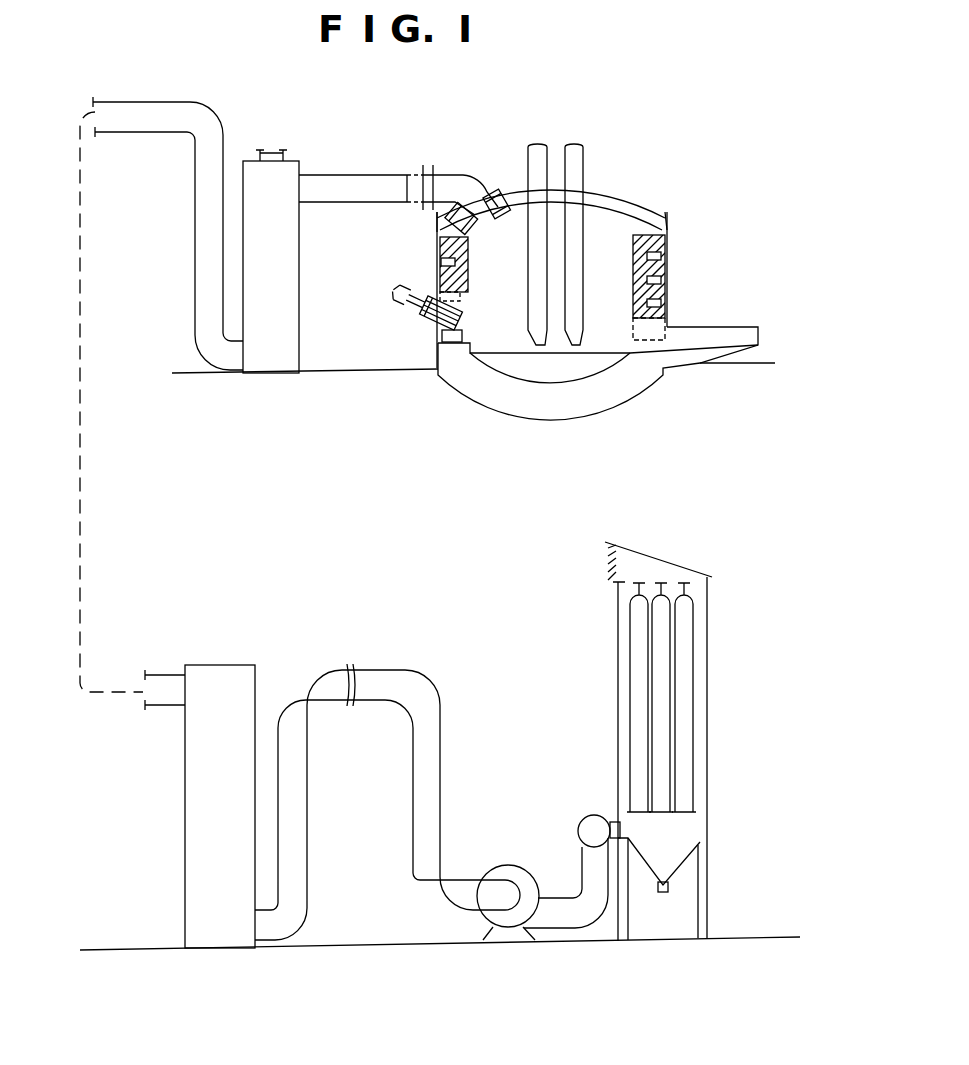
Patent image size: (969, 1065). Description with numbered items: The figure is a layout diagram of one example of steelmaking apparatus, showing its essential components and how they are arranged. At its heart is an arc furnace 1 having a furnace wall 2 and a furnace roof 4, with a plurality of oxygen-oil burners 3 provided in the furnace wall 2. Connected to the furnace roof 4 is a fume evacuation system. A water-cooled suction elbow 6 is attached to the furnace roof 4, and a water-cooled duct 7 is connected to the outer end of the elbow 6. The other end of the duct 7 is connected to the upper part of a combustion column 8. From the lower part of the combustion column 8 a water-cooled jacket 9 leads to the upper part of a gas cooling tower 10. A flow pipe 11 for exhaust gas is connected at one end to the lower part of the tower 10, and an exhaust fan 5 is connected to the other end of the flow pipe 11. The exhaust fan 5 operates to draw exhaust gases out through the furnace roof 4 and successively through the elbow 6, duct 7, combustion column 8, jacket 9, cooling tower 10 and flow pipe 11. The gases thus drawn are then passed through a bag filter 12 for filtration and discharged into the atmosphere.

The arc furnace 1 is at (678, 259).
The furnace wall 2 is at (438, 272).
The oxygen-oil burner 3 is at (418, 308).
The furnace roof 4 is at (607, 198).
The exhaust fan 5 is at (509, 864).
The water-cooled suction elbow 6 is at (463, 175).
The water-cooled duct 7 is at (351, 175).
The combustion column 8 is at (290, 225).
The return pipe 9 is at (198, 214).
The gas cooling tower 10 is at (228, 665).
The flow pipe 11 is at (398, 670).
The bag filter 12 is at (707, 677).